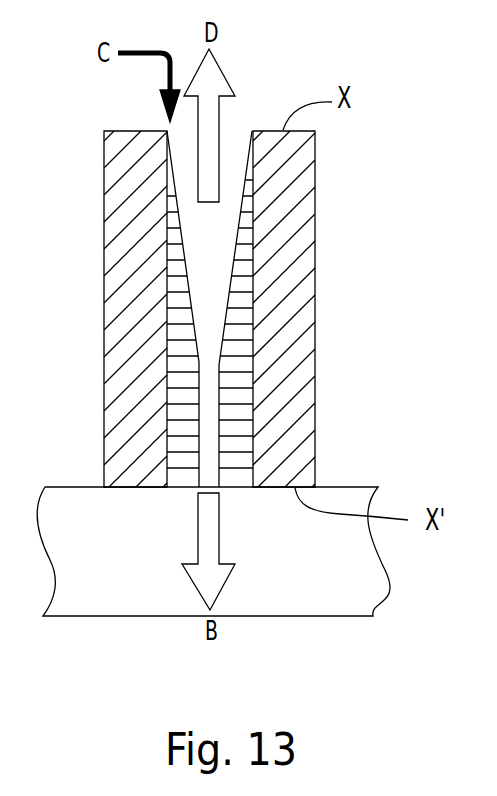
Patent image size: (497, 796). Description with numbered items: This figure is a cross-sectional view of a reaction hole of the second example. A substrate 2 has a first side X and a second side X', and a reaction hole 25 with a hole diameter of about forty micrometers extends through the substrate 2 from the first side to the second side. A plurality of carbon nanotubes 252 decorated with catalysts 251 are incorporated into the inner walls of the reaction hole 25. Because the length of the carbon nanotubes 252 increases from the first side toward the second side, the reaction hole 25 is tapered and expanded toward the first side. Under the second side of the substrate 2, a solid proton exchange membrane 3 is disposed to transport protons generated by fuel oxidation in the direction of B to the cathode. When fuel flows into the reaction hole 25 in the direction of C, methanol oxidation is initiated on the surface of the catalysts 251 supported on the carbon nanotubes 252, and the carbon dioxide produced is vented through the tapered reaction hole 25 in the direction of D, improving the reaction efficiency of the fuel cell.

The substrate 2 is at (105, 317).
The reaction hole 25 is at (198, 232).
The catalyst 251 is at (243, 348).
The carbon nanotube 252 is at (237, 403).
The solid proton exchange membrane 3 is at (363, 593).